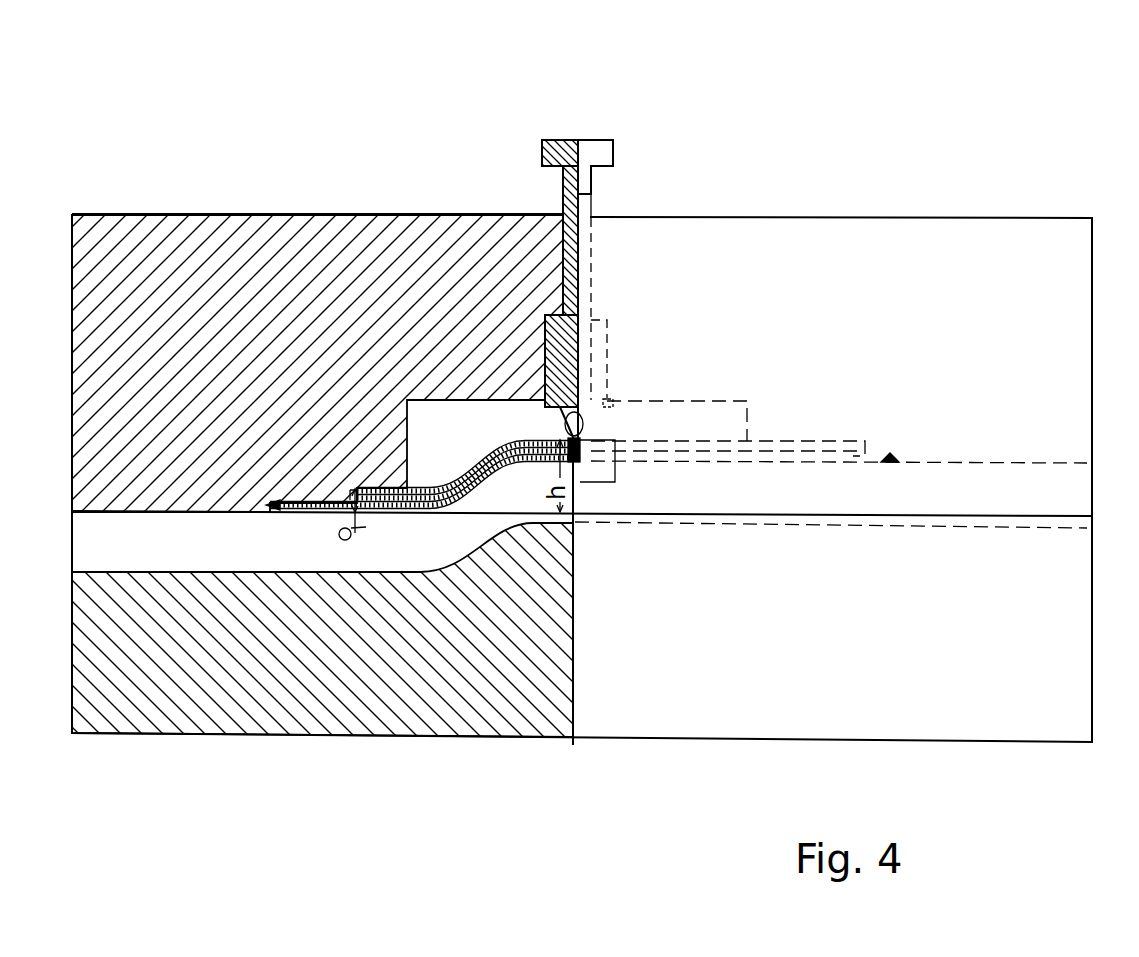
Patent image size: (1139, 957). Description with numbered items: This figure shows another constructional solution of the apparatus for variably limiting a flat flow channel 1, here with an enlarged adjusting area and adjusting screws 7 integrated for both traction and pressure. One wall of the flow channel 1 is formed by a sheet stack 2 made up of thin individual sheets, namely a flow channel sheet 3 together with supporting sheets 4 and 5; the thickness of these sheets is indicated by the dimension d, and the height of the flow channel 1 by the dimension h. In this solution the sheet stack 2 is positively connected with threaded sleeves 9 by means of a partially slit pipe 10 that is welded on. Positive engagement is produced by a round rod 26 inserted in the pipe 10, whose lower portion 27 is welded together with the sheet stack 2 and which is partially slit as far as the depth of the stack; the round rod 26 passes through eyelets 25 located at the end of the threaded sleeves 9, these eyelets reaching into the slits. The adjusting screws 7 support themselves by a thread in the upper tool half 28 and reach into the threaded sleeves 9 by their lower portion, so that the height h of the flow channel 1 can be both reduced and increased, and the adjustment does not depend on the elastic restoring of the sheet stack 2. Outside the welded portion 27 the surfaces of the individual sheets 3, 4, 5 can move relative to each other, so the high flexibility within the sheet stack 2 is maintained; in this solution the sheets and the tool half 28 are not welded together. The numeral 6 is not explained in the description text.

The flow channel 1 is at (399, 534).
The sheet stack 2 is at (436, 488).
The flow channel sheet 3 is at (463, 459).
The supporting sheet 4 is at (480, 446).
The supporting sheet 5 is at (495, 438).
The mold cavity 6 is at (912, 424).
The adjusting screws 7 is at (544, 140).
The threaded sleeves 9 is at (546, 316).
The partially slit pipe 10 is at (572, 440).
The eyelets 25 is at (565, 440).
The round rod 26 is at (568, 440).
The lower portion 27 is at (590, 441).
The upper tool half 28 is at (1021, 282).